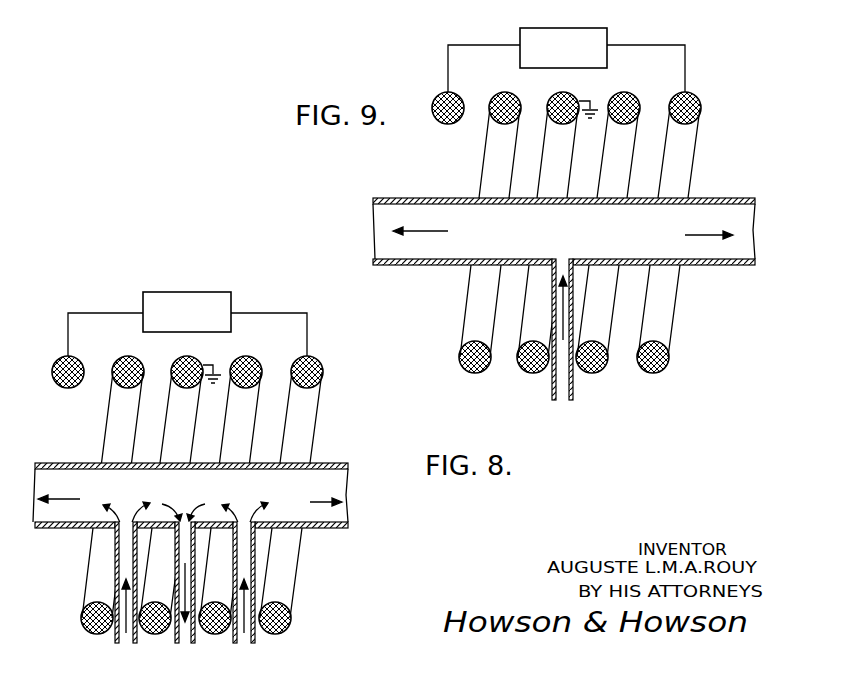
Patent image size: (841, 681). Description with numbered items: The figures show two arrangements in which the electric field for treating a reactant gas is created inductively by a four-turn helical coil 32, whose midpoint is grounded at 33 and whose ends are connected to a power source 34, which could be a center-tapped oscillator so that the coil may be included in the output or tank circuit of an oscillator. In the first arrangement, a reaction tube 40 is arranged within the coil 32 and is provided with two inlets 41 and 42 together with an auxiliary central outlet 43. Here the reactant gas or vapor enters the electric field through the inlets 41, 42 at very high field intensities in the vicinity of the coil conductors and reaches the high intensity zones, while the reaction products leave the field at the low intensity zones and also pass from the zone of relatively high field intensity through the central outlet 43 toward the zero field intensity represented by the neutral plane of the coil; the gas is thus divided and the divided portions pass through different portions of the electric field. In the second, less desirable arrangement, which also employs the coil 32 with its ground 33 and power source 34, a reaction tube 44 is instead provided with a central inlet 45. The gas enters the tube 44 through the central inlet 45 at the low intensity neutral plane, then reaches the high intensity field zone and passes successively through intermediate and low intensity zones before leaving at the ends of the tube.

In FIG. 9, the helical coil 32 is at (700, 102).
In FIG. 8, the helical coil 32 is at (322, 366).
In FIG. 9, the ground connection 33 is at (590, 100).
In FIG. 8, the ground connection 33 is at (213, 365).
In FIG. 9, the power source 34 is at (572, 28).
In FIG. 8, the power source 34 is at (190, 292).
In FIG. 8, the reaction tube 40 is at (330, 529).
In FIG. 8, the inlet 41 is at (114, 639).
In FIG. 8, the inlet 42 is at (255, 641).
In FIG. 8, the auxiliary central outlet 43 is at (175, 639).
In FIG. 9, the reaction tube 44 is at (428, 198).
In FIG. 9, the central inlet 45 is at (573, 392).